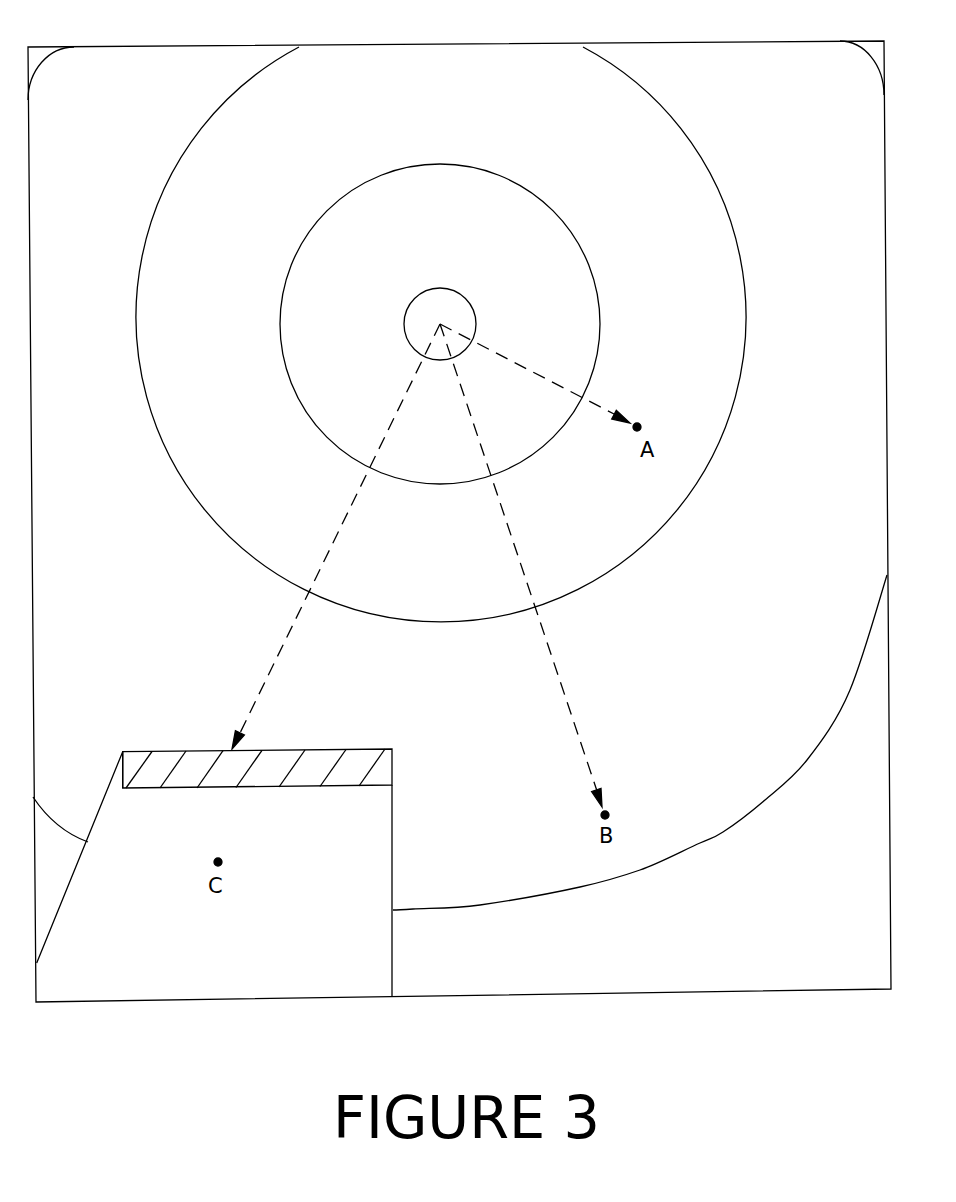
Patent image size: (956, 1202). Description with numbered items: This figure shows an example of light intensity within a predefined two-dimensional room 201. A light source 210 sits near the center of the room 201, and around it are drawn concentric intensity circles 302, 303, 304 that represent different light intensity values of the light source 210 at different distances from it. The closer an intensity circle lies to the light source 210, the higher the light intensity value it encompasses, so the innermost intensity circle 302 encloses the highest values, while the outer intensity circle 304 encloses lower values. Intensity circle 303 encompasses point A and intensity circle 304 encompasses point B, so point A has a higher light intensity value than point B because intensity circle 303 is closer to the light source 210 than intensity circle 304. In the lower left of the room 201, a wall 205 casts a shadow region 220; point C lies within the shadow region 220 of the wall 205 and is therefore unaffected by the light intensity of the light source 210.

The room 201 is at (800, 41).
The intensity circle 303 is at (673, 112).
The intensity circle 302 is at (493, 172).
The light source 210 is at (458, 288).
The wall 205 is at (143, 740).
The shadow region 220 is at (393, 934).
The intensity circle 304 is at (722, 832).